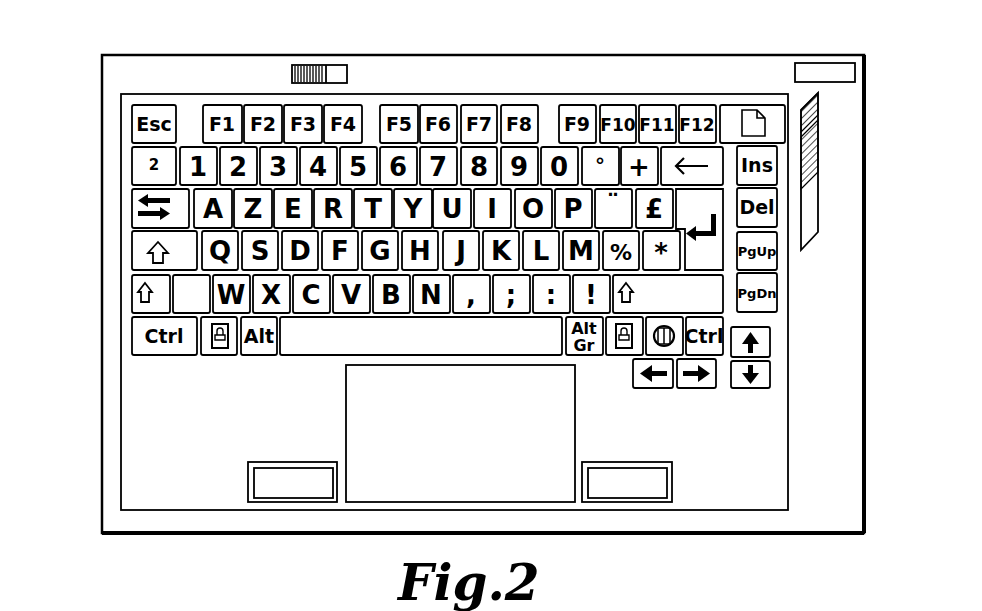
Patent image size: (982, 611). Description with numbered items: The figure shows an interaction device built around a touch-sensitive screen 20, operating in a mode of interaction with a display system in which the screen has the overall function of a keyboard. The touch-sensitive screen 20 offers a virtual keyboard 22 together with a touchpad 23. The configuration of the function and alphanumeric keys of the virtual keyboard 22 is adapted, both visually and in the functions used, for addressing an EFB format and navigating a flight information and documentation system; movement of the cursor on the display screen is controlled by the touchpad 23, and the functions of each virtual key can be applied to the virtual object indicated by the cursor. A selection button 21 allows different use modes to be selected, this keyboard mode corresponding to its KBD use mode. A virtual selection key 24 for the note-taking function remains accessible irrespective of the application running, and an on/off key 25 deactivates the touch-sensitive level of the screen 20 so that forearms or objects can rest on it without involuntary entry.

The touch-sensitive screen 20 is at (99, 422).
The selection button 21 is at (833, 193).
The virtual keyboard 22 is at (588, 363).
The touchpad 23 is at (471, 440).
The virtual selection key 24 is at (736, 104).
The on/off key 25 is at (335, 64).